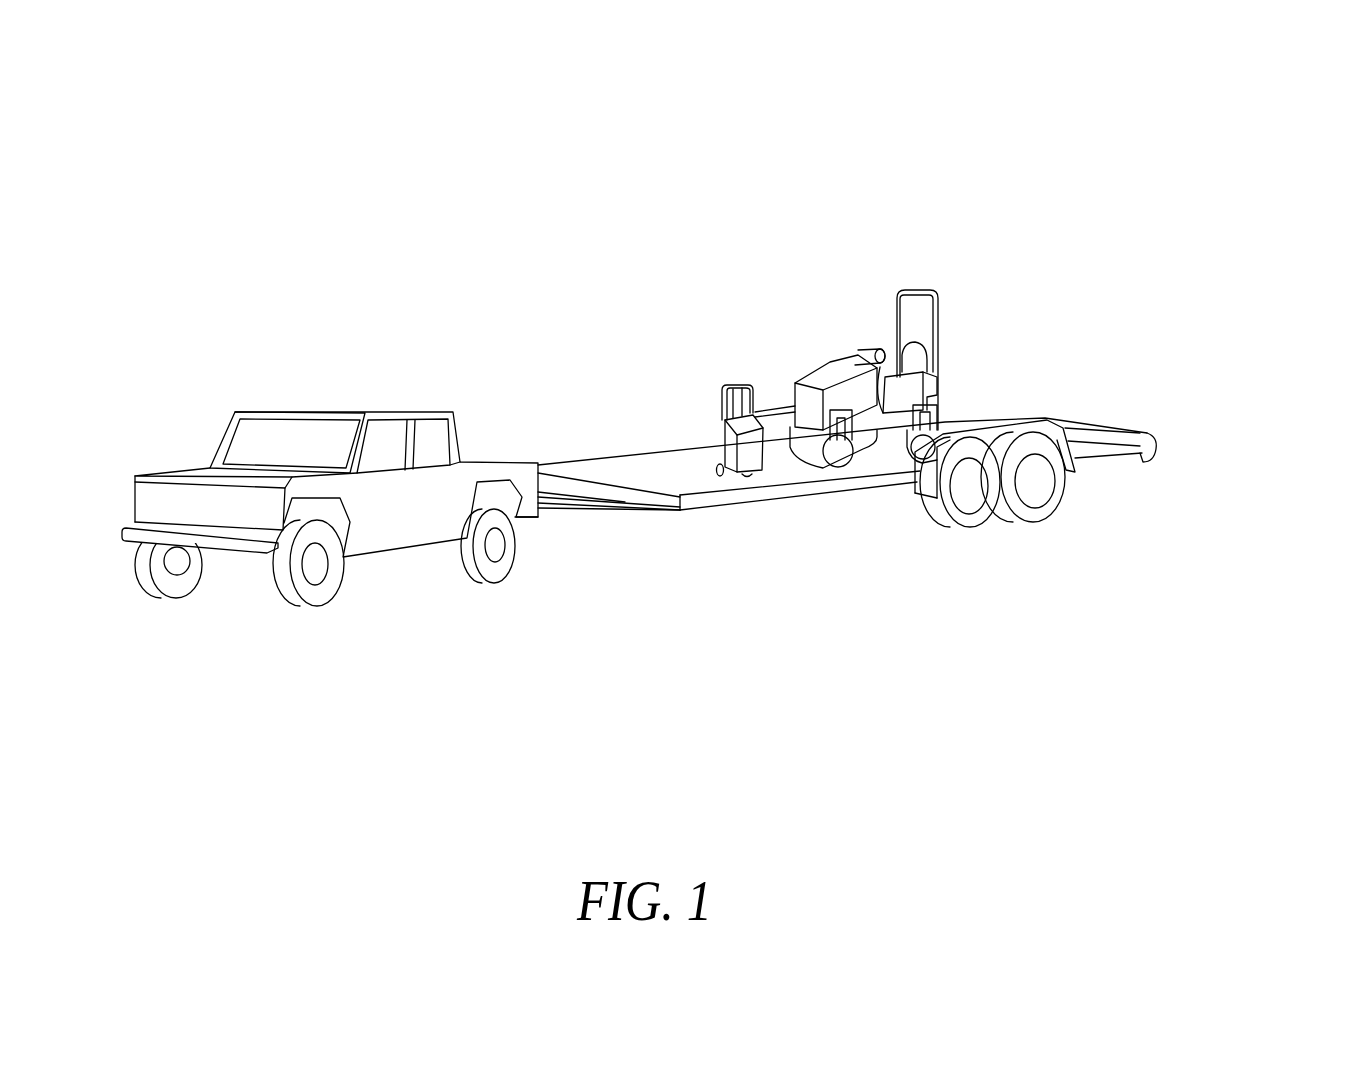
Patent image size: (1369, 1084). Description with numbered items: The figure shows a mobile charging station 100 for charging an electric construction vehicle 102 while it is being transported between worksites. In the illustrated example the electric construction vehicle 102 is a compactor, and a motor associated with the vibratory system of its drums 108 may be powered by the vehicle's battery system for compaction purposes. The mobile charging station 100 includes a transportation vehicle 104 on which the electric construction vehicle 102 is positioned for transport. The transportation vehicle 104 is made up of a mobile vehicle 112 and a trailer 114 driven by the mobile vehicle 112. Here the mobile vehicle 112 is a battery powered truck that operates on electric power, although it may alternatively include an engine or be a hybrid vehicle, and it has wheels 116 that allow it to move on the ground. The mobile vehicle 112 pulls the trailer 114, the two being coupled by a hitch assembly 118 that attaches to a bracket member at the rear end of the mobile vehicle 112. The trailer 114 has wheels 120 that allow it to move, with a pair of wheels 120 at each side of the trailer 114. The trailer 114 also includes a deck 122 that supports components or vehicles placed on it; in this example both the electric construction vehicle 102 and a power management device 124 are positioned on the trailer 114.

The mobile charging station 100 is at (1031, 118).
The electric construction vehicle 102 is at (913, 278).
The transportation vehicle 104 is at (535, 428).
The drums 108 is at (893, 464).
The mobile vehicle 112 is at (348, 381).
The trailer 114 is at (1180, 440).
The wheels 116 is at (325, 600).
The hitch assembly 118 is at (568, 511).
The wheels 120 is at (972, 527).
The deck 122 is at (1088, 432).
The power management device 124 is at (734, 365).